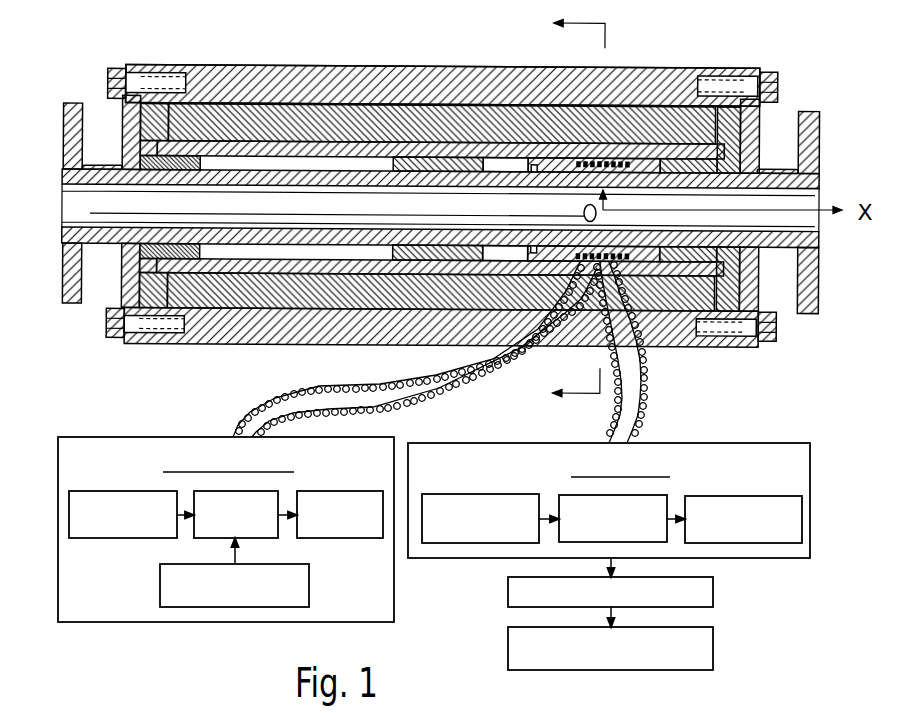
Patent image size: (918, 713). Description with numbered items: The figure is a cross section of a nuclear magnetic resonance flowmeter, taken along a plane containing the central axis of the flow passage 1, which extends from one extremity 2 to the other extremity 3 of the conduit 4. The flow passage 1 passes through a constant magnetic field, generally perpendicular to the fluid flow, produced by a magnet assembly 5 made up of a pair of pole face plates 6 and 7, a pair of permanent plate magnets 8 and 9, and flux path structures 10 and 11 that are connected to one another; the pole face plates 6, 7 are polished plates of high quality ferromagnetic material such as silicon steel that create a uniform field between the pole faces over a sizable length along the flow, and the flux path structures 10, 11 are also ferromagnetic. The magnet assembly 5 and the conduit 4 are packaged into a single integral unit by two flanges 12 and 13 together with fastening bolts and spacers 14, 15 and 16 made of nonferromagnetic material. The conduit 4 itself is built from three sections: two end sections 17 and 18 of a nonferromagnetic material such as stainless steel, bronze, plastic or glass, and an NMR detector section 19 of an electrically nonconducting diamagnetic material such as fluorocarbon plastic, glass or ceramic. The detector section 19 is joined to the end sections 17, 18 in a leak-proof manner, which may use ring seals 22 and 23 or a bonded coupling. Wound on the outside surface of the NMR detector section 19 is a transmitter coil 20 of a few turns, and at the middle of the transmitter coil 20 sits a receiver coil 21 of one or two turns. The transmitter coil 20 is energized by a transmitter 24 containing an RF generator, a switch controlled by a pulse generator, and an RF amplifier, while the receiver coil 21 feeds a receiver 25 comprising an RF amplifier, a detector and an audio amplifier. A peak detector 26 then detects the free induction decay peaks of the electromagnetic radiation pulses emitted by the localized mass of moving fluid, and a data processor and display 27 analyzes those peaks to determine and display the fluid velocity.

The flow passage 1 is at (110, 200).
The one extremity 2 is at (62, 204).
The other extremity 3 is at (819, 200).
The conduit 4 is at (67, 333).
The magnet assembly 5 is at (228, 64).
The pole face plate 6 is at (242, 146).
The pole face plate 7 is at (182, 312).
The permanent plate magnet 8 is at (298, 110).
The permanent plate magnet 9 is at (218, 270).
The flux path structure 10 is at (359, 92).
The flux path structure 11 is at (252, 325).
The flange 12 is at (118, 285).
The flange 13 is at (757, 293).
The spacer 14 is at (170, 118).
The spacer 15 is at (422, 156).
The spacer 16 is at (759, 120).
The end section 17 is at (506, 166).
The end section 18 is at (695, 275).
The NMR detector section 19 is at (660, 110).
The transmitter coil 20 is at (640, 168).
The receiver coil 21 is at (600, 160).
The ring seal 22 is at (582, 158).
The ring seal 23 is at (759, 154).
The transmitter 24 is at (241, 622).
The receiver 25 is at (453, 558).
The peak detector 26 is at (713, 592).
The data processor and display 27 is at (713, 650).